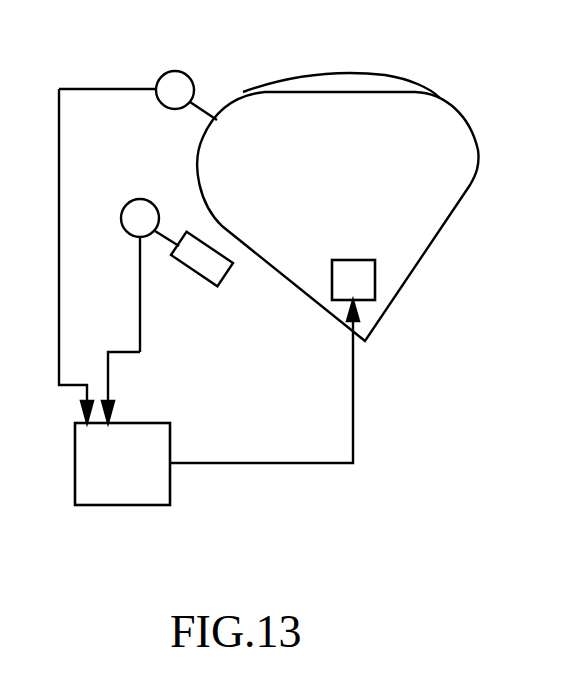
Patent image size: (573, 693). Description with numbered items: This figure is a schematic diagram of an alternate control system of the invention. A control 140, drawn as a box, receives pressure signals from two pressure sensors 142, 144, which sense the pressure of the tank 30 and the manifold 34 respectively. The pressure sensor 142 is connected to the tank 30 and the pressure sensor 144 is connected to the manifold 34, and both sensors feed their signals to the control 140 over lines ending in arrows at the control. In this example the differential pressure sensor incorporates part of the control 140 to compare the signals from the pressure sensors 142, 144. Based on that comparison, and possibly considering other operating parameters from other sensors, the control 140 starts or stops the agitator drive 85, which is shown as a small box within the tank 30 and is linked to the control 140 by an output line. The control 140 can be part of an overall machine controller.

The tank 30 is at (358, 174).
The manifold 34 is at (224, 276).
The agitator drive 85 is at (376, 280).
The control 140 is at (152, 519).
The pressure sensor 142 is at (191, 76).
The pressure sensor 144 is at (138, 199).